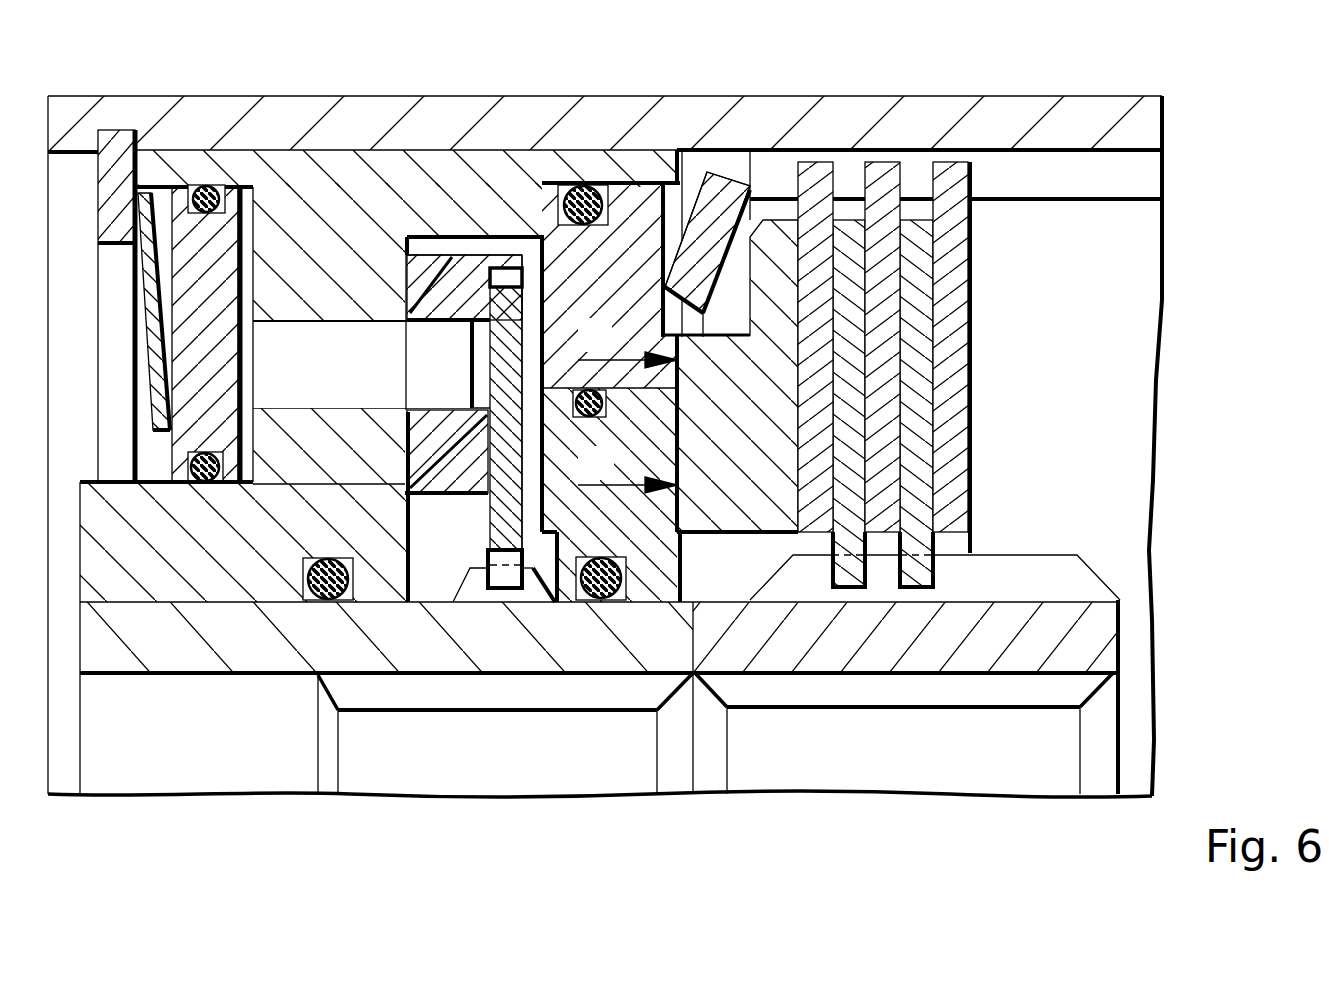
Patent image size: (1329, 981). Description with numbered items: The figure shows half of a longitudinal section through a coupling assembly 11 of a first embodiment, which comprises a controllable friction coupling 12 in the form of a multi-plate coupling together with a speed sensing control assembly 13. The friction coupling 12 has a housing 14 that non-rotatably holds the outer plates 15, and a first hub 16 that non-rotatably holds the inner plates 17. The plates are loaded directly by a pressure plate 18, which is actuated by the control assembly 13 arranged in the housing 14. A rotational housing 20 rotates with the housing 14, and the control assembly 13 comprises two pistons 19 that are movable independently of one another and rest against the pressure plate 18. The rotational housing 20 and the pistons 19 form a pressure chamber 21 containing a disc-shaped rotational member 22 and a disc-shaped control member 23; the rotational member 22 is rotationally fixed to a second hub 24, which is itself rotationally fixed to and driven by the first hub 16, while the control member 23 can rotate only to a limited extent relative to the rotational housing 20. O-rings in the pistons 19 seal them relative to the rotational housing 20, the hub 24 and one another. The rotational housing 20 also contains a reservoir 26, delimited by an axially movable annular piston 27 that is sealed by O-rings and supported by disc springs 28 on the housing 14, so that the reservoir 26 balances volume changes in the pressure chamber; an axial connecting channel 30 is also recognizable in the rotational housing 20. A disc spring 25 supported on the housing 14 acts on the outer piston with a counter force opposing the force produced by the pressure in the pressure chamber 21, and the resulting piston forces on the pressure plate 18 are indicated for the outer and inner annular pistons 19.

The coupling assembly 11 is at (962, 84).
The controllable friction coupling 12 is at (984, 275).
The speed sensing control assembly 13 is at (447, 195).
The housing 14 is at (843, 120).
The outer plates 15 is at (885, 178).
The first hub 16 is at (937, 643).
The inner plates 17 is at (855, 562).
The pressure plate 18 is at (758, 475).
The pistons 19 is at (630, 247).
The rotational housing 20 is at (383, 197).
The pressure chamber 21 is at (533, 260).
The rotational member 22 is at (505, 522).
The control member 23 is at (442, 457).
The second hub 24 is at (368, 652).
The disc spring 25 is at (718, 197).
The reservoir 26 is at (243, 195).
The annular piston 27 is at (187, 240).
The disc springs 28 is at (157, 200).
The axial connecting channel 30 is at (310, 355).